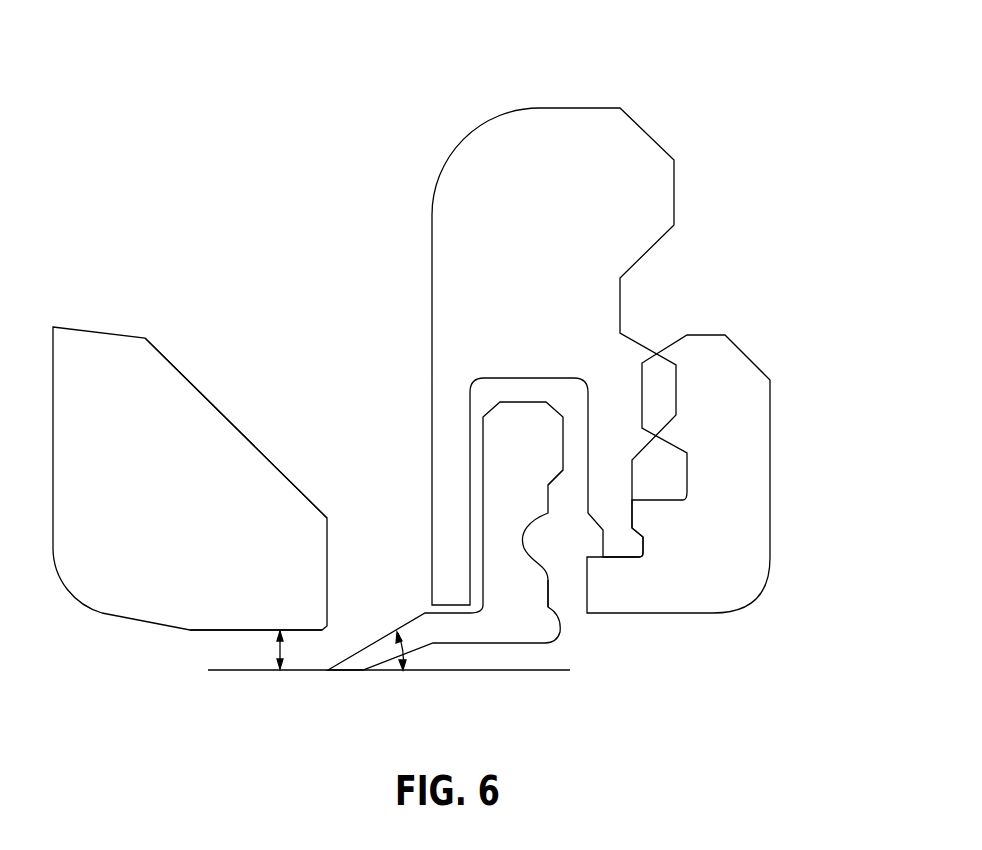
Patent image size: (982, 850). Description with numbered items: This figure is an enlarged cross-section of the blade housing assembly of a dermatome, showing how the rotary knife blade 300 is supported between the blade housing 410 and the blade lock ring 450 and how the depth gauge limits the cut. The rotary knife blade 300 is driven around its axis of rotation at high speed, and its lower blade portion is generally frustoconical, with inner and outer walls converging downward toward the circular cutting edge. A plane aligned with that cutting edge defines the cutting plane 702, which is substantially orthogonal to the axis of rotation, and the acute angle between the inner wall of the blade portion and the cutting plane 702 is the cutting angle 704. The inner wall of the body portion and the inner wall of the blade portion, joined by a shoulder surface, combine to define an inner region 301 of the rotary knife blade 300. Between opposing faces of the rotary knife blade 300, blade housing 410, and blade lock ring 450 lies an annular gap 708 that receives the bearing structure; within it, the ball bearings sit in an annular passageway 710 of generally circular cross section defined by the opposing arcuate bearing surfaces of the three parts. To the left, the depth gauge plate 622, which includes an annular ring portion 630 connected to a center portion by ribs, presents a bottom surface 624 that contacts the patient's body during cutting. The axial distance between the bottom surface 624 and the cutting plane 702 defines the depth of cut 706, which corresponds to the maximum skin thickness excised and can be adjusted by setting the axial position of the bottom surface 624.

The inner region 301 is at (79, 180).
The depth gauge plate 622 is at (103, 332).
The annular ring portion 630 is at (173, 440).
The bottom surface 624 is at (223, 630).
The blade housing 410 is at (587, 108).
The blade lock ring 450 is at (753, 360).
The rotary knife blade 300 is at (500, 645).
The cutting plane 702 is at (255, 670).
The cutting angle 704 is at (404, 648).
The depth of cut 706 is at (282, 651).
The annular gap 708 is at (585, 619).
The annular passageway 710 is at (585, 556).